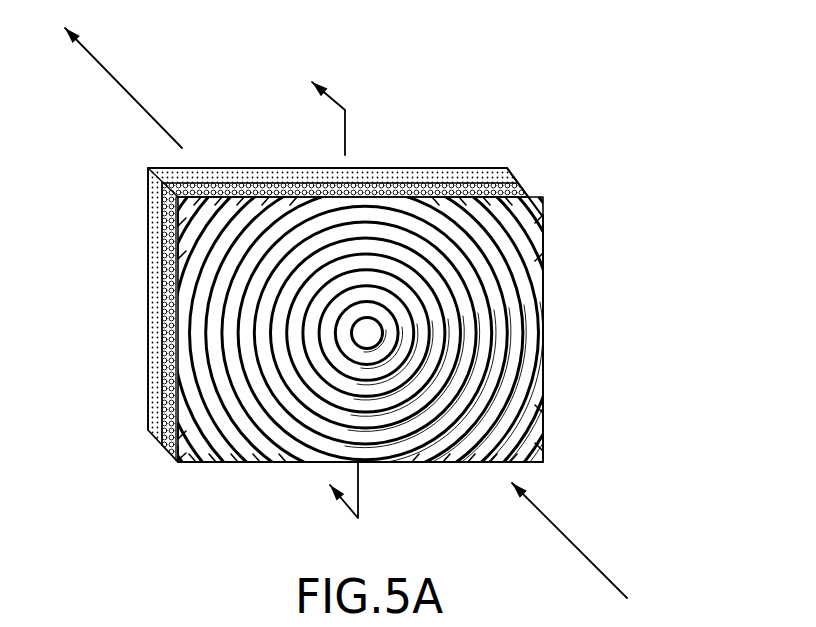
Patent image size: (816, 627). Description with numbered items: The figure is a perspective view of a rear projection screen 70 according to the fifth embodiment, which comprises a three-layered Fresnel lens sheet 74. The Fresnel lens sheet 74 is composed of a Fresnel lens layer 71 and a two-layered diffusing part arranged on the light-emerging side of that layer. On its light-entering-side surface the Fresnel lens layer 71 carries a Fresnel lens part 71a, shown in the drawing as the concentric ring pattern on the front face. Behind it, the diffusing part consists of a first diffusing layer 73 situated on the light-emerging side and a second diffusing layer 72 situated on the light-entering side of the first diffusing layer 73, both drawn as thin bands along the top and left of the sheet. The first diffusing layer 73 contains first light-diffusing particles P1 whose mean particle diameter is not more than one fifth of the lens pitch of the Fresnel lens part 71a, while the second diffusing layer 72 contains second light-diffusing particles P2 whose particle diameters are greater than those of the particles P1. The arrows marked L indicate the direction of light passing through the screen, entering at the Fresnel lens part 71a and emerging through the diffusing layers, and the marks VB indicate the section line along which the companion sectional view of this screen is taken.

The rear projection screen 70 is at (541, 162).
The Fresnel lens layer 71 is at (173, 455).
The Fresnel lens part 71a is at (275, 456).
The second diffusing layer 72 is at (162, 447).
The first diffusing layer 73 is at (152, 432).
The Fresnel lens sheet 74 is at (421, 168).
The first light-diffusing particles P1 is at (152, 275).
The second light-diffusing particles P2 is at (166, 312).
The light L is at (107, 67).
The section line VB is at (331, 294).